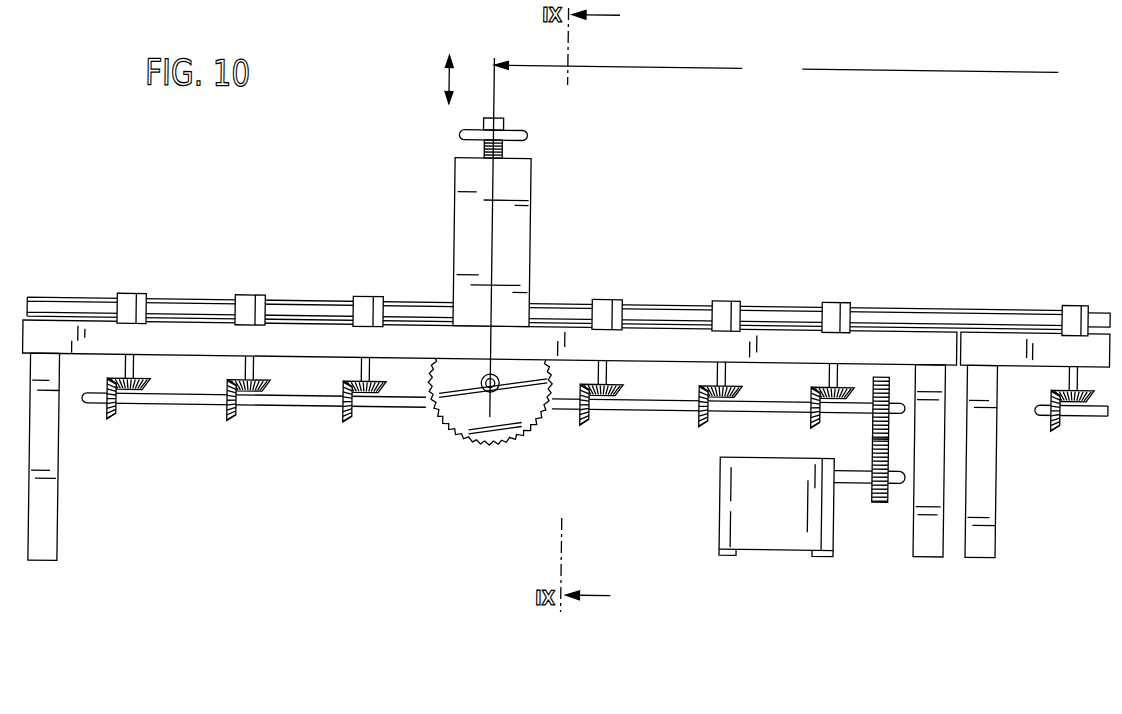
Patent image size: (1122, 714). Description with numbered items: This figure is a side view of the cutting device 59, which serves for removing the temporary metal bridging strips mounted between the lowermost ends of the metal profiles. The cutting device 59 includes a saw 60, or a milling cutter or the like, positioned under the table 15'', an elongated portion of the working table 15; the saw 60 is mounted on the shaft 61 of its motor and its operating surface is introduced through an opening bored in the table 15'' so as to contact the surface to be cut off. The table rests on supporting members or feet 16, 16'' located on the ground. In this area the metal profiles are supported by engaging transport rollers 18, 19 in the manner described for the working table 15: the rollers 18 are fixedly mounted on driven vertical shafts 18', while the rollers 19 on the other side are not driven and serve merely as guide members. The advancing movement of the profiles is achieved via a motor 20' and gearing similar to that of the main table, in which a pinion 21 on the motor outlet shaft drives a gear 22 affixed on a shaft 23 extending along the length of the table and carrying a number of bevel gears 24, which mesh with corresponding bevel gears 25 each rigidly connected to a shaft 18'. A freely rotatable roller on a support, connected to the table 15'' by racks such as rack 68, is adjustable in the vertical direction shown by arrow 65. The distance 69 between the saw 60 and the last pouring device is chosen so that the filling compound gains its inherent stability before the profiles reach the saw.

The working table 15 is at (1035, 379).
The table 15'' is at (489, 391).
The supporting members or feet 16 is at (1007, 461).
The support leg 16'' is at (495, 485).
The transport rollers 18 is at (616, 281).
The transport rollers 19 is at (568, 313).
The vertical shafts 18' is at (601, 375).
The motor 20' is at (811, 527).
The pinion 21 is at (882, 494).
The gear 22 is at (886, 411).
The shaft 23 is at (679, 397).
The bevel gears 24 is at (231, 414).
The bevel gears 25 is at (269, 377).
The cutting device 59 is at (547, 211).
The saw 60 is at (473, 408).
The shaft 61 is at (498, 386).
The arrow 65 is at (444, 75).
The rack 68 is at (460, 202).
The distance 69 is at (776, 69).